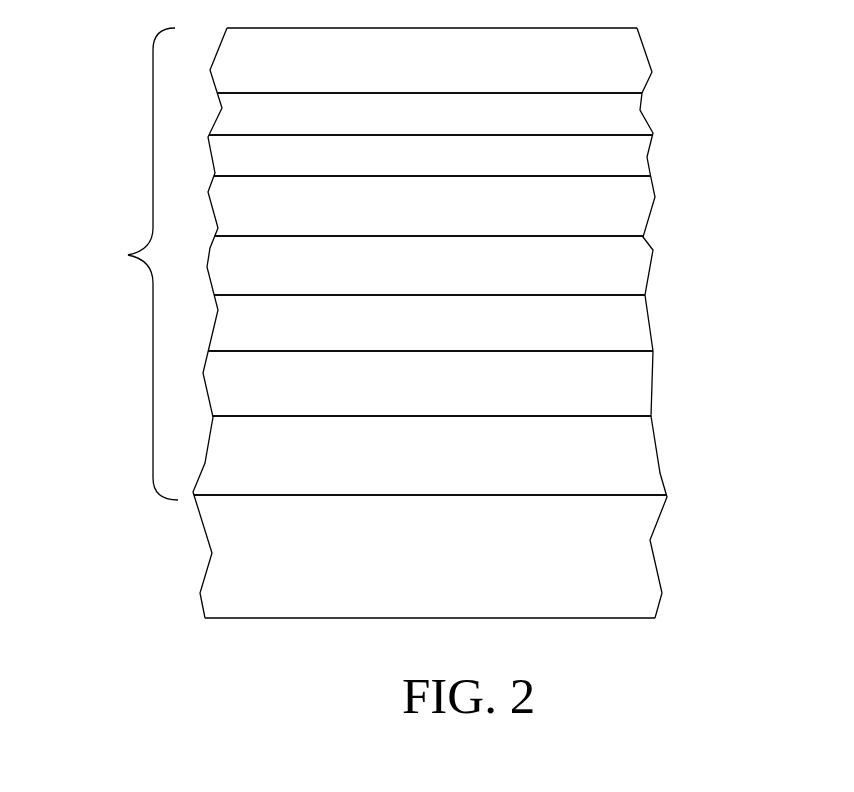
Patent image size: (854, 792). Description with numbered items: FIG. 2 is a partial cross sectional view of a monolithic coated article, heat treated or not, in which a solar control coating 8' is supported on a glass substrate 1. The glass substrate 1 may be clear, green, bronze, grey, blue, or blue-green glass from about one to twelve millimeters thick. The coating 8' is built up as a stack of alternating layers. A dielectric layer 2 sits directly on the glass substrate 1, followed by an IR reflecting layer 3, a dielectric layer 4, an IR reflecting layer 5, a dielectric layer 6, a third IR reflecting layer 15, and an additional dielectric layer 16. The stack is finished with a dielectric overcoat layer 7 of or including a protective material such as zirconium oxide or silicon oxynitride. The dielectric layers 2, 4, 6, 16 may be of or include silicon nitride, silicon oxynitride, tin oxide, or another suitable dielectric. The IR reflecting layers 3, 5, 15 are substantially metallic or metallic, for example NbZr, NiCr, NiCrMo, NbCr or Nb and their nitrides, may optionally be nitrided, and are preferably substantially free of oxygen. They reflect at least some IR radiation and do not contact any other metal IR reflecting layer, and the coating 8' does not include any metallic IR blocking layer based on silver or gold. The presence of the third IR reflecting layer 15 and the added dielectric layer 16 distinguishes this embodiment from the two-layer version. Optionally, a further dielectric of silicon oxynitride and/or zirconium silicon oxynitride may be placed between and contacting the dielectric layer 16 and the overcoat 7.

The glass substrate 1 is at (638, 557).
The dielectric layer 2 is at (638, 460).
The IR reflecting layer 3 is at (638, 378).
The dielectric layer 4 is at (638, 316).
The IR reflecting layer 5 is at (650, 248).
The dielectric layer 6 is at (638, 197).
The IR reflecting layer 15 is at (638, 155).
The dielectric layer 16 is at (638, 117).
The dielectric overcoat layer 7 is at (638, 72).
The solar control coating 8' is at (108, 264).